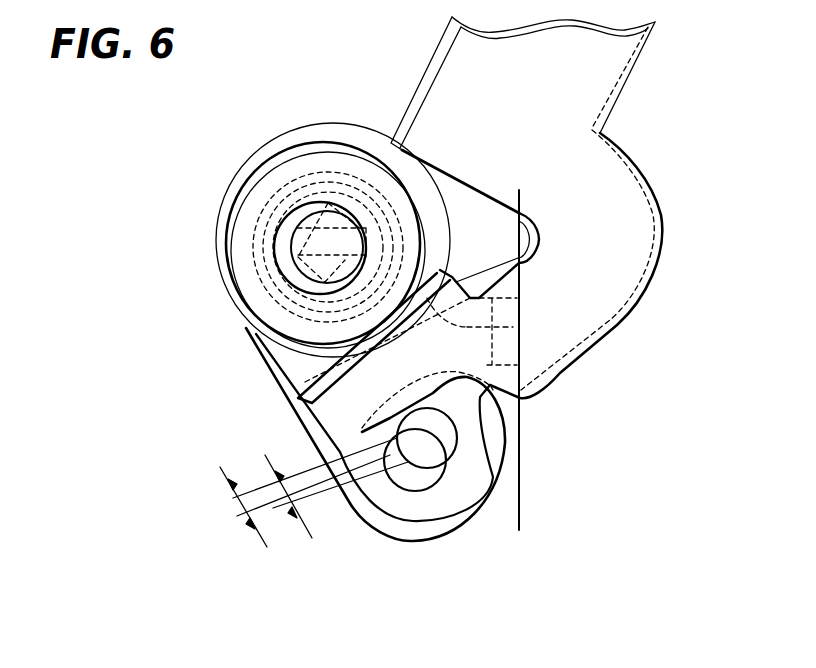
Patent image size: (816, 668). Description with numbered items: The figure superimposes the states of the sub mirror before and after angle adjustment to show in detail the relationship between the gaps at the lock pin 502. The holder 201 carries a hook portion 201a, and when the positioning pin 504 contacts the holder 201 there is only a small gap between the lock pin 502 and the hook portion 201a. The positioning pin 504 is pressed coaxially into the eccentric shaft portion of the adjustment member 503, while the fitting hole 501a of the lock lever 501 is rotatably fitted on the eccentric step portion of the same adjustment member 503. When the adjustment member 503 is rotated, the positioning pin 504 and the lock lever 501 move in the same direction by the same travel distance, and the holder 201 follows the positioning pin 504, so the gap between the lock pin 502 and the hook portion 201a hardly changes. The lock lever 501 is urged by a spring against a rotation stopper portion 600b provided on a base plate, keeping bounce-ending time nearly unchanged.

The holder 201 is at (585, 350).
The hook portion 201a is at (390, 394).
The lock lever 501 is at (410, 542).
The fitting hole 501a is at (507, 352).
The lock pin 502 is at (428, 477).
The adjustment member 503 is at (325, 247).
The positioning pin 504 is at (262, 173).
The rotation stopper portion 600b is at (521, 490).